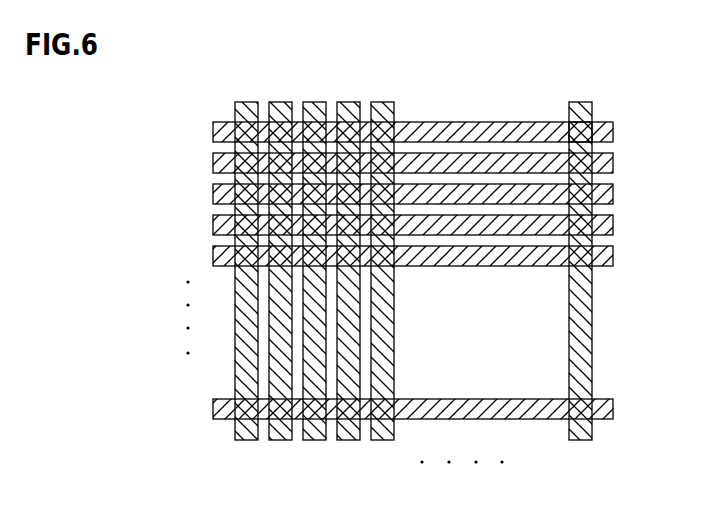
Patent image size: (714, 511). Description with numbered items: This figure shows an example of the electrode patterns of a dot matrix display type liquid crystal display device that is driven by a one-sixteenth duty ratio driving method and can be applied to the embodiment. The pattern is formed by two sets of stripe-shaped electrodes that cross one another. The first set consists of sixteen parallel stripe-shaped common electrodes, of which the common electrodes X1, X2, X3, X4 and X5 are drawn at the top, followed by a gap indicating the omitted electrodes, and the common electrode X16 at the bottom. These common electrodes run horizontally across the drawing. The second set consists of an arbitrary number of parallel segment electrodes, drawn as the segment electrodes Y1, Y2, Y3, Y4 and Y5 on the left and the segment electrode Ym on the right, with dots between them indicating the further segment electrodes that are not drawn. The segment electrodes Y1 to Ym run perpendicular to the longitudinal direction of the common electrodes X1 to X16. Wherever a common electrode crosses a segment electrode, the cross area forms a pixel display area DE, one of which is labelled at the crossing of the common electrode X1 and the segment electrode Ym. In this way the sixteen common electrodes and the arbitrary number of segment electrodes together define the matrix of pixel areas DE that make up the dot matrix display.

The common electrode X1 is at (395, 133).
The common electrode X2 is at (395, 164).
The common electrode X3 is at (395, 195).
The common electrode X4 is at (395, 226).
The common electrode X5 is at (395, 257).
The common electrode X16 is at (390, 410).
The segment electrode Y1 is at (246, 289).
The segment electrode Y2 is at (280, 289).
The segment electrode Y3 is at (314, 289).
The segment electrode Y4 is at (348, 289).
The segment electrode Y5 is at (382, 289).
The segment electrode Ym is at (580, 289).
The pixel area DE is at (594, 128).